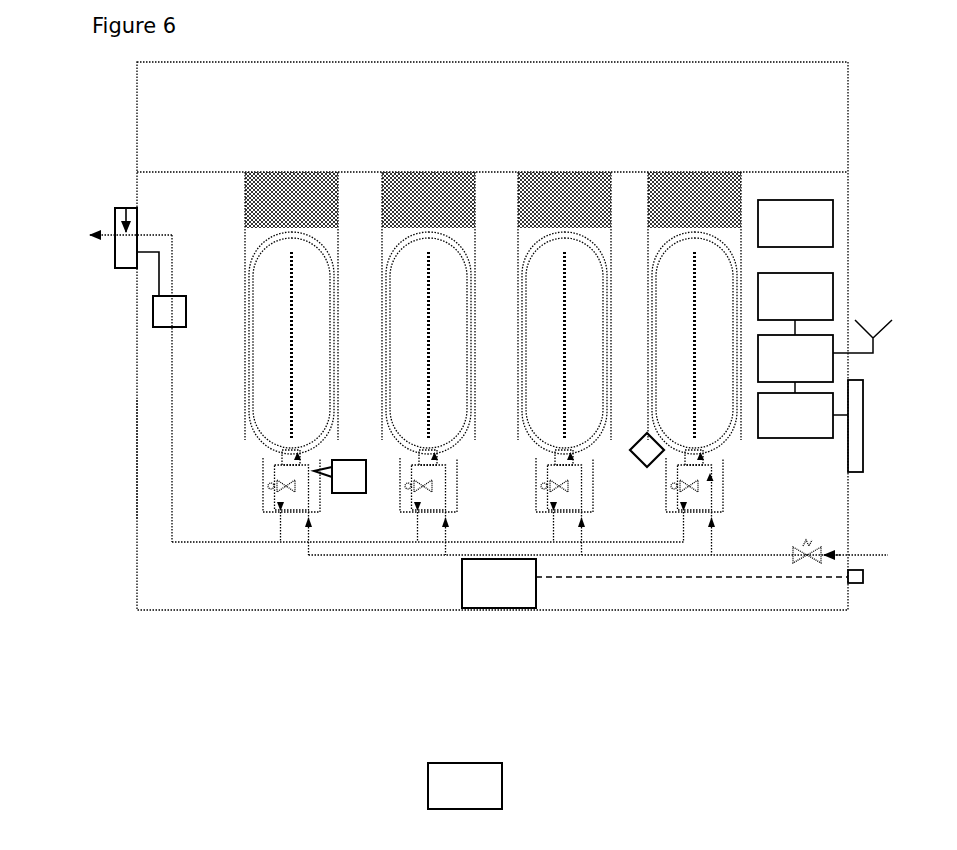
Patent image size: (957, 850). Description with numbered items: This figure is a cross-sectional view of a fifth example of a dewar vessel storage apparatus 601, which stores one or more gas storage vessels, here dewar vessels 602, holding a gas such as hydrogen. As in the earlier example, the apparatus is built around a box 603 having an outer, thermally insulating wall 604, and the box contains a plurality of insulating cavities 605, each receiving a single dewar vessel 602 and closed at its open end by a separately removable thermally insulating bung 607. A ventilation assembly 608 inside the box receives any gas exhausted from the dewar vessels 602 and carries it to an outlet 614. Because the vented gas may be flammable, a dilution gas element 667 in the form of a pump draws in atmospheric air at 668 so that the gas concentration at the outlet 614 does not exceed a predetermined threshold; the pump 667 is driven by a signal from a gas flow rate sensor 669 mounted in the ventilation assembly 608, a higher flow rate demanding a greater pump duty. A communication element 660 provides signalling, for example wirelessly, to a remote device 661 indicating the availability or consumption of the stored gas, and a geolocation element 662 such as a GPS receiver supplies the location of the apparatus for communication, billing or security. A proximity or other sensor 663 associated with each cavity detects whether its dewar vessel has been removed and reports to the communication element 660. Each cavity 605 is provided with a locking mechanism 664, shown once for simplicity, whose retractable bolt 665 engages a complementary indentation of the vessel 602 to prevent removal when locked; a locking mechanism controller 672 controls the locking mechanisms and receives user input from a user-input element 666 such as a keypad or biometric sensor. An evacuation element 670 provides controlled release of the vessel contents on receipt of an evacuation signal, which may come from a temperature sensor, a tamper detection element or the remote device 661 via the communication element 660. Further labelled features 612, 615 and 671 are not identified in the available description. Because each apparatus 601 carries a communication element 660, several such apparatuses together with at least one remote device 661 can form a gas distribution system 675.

The storage apparatus 601 is at (95, 143).
The dewar vessels 602 is at (380, 410).
The box 603 is at (137, 436).
The outer thermally insulating wall 604 is at (137, 479).
The cavity 605 is at (246, 243).
The bung 607 is at (292, 232).
The ventilation assembly 608 is at (216, 548).
The housing 612 is at (162, 107).
The outlet 614 is at (102, 239).
The outlet manifold 615 is at (296, 531).
The communication element 660 is at (825, 356).
The remote device 661 is at (465, 786).
The geolocation element 662 is at (795, 304).
The sensor 663 is at (644, 455).
The locking mechanism 664 is at (357, 478).
The retractable bolt 665 is at (314, 470).
The user-input element 666 is at (857, 434).
The dilution gas element 667 is at (115, 220).
The atmospheric air inlet 668 is at (126, 207).
The gas flow rate sensor 669 is at (180, 303).
The evacuation element 670 is at (655, 583).
The processor 671 is at (795, 223).
The locking mechanism controller 672 is at (895, 604).
The gas distribution system 675 is at (175, 760).